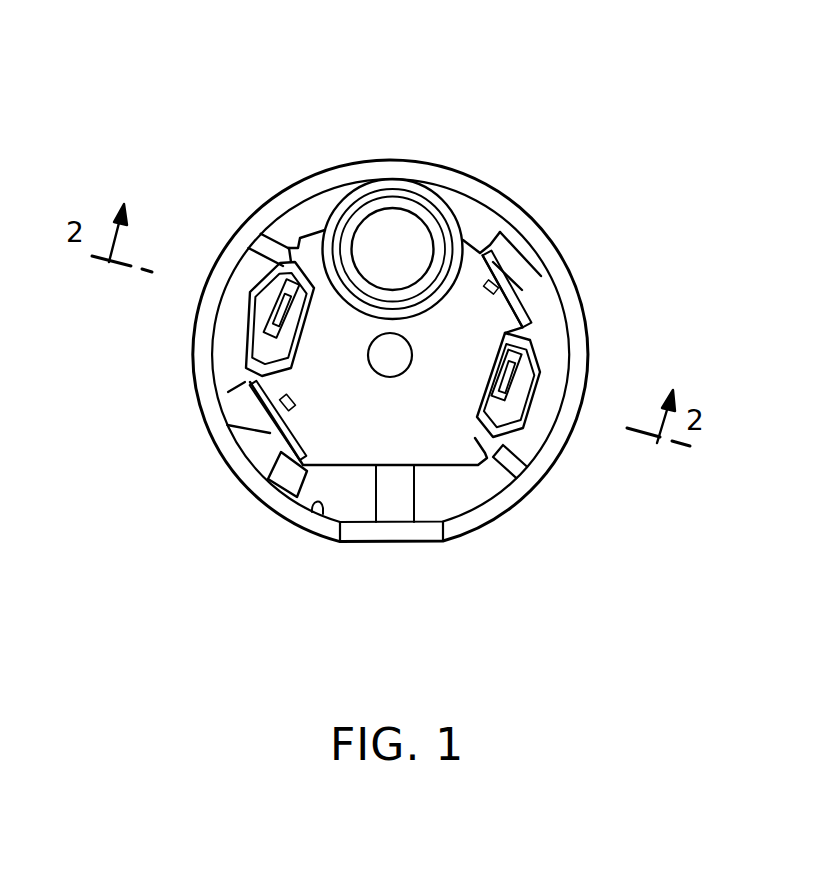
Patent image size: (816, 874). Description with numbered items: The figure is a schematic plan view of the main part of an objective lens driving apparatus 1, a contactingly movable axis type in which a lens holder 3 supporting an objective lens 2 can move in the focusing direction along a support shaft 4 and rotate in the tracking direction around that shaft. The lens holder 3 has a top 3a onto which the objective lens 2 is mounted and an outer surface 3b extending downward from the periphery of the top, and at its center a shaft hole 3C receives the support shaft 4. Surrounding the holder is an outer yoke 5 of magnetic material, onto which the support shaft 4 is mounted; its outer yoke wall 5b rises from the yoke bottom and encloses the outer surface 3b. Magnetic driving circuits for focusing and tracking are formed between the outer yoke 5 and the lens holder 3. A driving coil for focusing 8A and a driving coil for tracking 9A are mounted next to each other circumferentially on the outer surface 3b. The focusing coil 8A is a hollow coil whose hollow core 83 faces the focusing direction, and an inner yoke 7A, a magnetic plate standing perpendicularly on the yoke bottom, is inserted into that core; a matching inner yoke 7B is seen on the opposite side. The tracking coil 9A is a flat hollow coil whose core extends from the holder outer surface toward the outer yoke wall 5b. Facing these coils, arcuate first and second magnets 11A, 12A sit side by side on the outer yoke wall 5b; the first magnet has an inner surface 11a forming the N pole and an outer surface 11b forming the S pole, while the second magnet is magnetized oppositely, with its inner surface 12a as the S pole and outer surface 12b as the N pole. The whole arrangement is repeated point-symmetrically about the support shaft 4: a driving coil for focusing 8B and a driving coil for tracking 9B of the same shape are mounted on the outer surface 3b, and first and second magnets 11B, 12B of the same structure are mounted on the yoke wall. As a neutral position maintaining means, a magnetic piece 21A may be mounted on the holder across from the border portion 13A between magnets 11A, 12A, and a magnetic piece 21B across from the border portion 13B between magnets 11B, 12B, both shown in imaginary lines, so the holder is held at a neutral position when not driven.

The objective lens driving apparatus 1 is at (444, 143).
The objective lens 2 is at (387, 240).
The lens holder 3 is at (448, 438).
The top 3a is at (458, 434).
The outer surface 3b is at (322, 228).
The shaft hole 3C is at (404, 363).
The support shaft 4 is at (388, 367).
The outer yoke 5 is at (547, 250).
The outer yoke wall 5b is at (318, 512).
The inner yoke 7A is at (285, 303).
The coil 7B is at (508, 385).
The driving coil for focusing 8A is at (290, 252).
The hollow core 83 is at (266, 238).
The driving coil for focusing 8B is at (502, 440).
The driving coil for tracking 9A is at (264, 490).
The driving coil for tracking 9B is at (500, 233).
The first magnet 11A is at (228, 327).
The first magnet 11B is at (552, 372).
The inner surface 11a is at (244, 390).
The outer surface 11b is at (236, 440).
The second magnet 12A is at (254, 468).
The second magnet 12B is at (513, 232).
The inner surface 12a is at (296, 461).
The outer surface 12b is at (285, 497).
The border portion 13A is at (292, 400).
The border portion 13B is at (492, 293).
The magnetic piece 21A is at (282, 410).
The magnetic piece 21B is at (484, 332).